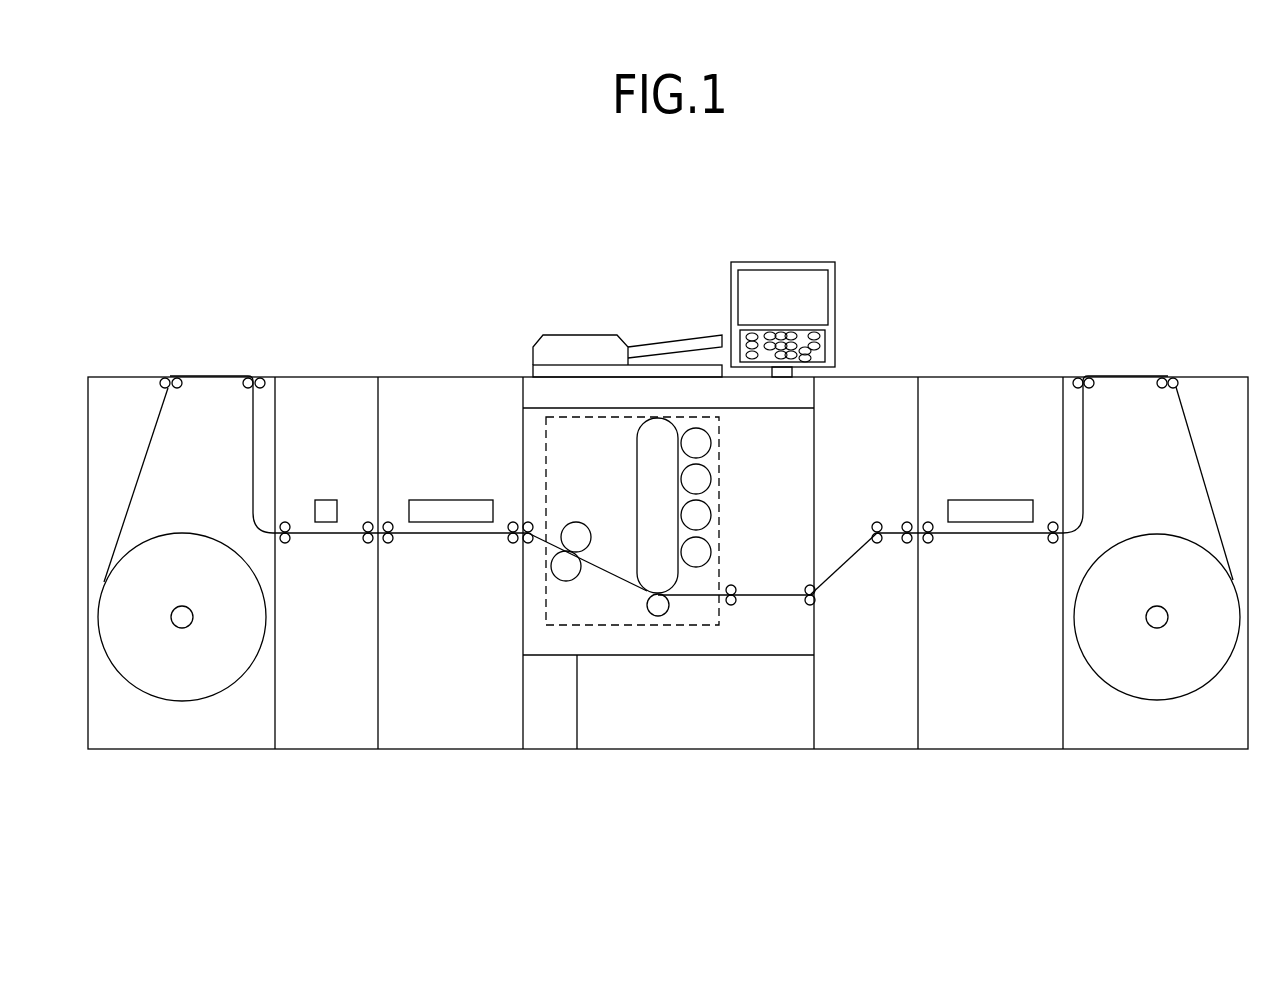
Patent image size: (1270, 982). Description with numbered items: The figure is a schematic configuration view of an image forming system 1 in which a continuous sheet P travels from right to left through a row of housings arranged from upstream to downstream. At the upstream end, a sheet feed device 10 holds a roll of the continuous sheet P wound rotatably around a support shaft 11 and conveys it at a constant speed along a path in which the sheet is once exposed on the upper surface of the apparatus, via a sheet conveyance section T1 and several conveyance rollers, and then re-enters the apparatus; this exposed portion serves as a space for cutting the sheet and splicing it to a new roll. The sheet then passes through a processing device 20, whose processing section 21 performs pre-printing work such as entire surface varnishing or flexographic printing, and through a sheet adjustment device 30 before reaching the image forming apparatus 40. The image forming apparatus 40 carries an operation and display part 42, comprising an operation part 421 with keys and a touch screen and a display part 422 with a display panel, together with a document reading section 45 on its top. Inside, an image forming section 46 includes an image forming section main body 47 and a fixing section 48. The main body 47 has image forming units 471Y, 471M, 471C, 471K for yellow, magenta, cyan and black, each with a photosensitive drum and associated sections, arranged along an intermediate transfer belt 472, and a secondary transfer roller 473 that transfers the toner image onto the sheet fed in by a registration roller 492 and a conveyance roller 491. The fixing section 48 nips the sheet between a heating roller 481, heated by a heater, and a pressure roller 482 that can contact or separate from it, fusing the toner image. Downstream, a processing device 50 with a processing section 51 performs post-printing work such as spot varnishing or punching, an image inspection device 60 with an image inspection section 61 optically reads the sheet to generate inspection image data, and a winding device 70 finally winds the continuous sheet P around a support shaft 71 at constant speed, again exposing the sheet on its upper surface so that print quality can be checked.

The image forming system 1 is at (1215, 200).
The sheet feed device 10 is at (1151, 557).
The support shaft 11 is at (1162, 627).
The processing device 20 is at (993, 591).
The processing section 21 is at (993, 498).
The sheet adjustment device 30 is at (863, 749).
The image forming apparatus 40 is at (714, 510).
The operation and display part 42 is at (818, 296).
The operation part 421 is at (817, 353).
The display part 422 is at (817, 300).
The document reading section 45 is at (582, 333).
The image forming section 46 is at (703, 414).
The image forming section main body 47 is at (692, 538).
The image forming unit 471Y is at (713, 444).
The image forming unit 471M is at (713, 480).
The image forming unit 471C is at (713, 516).
The image forming unit 471K is at (713, 553).
The intermediate transfer belt 472 is at (638, 452).
The secondary transfer roller 473 is at (663, 615).
The fixing section 48 is at (597, 570).
The heating roller 481 is at (581, 523).
The pressure roller 482 is at (568, 581).
The conveyance roller 491 is at (807, 603).
The registration roller 492 is at (738, 586).
The processing device 50 is at (458, 591).
The processing section 51 is at (452, 498).
The image inspection device 60 is at (404, 591).
The image inspection section 61 is at (325, 498).
The winding device 70 is at (191, 590).
The support shaft 71 is at (188, 626).
The continuous sheet P is at (1200, 471).
The sheet conveyance section T1 is at (1178, 376).